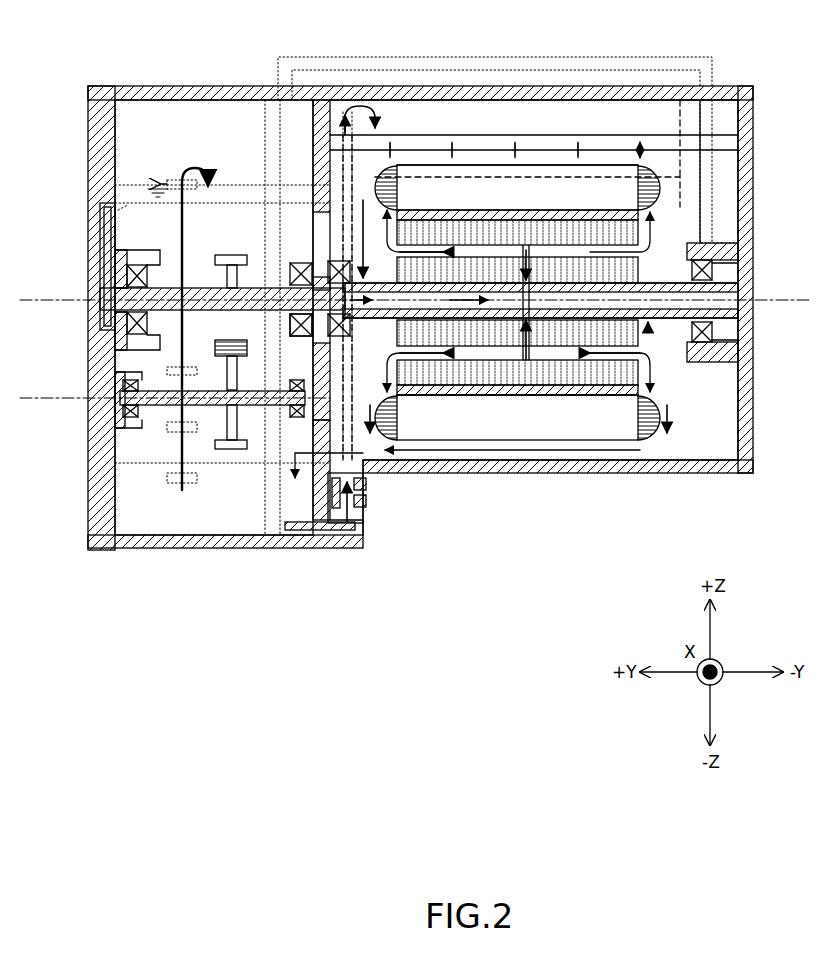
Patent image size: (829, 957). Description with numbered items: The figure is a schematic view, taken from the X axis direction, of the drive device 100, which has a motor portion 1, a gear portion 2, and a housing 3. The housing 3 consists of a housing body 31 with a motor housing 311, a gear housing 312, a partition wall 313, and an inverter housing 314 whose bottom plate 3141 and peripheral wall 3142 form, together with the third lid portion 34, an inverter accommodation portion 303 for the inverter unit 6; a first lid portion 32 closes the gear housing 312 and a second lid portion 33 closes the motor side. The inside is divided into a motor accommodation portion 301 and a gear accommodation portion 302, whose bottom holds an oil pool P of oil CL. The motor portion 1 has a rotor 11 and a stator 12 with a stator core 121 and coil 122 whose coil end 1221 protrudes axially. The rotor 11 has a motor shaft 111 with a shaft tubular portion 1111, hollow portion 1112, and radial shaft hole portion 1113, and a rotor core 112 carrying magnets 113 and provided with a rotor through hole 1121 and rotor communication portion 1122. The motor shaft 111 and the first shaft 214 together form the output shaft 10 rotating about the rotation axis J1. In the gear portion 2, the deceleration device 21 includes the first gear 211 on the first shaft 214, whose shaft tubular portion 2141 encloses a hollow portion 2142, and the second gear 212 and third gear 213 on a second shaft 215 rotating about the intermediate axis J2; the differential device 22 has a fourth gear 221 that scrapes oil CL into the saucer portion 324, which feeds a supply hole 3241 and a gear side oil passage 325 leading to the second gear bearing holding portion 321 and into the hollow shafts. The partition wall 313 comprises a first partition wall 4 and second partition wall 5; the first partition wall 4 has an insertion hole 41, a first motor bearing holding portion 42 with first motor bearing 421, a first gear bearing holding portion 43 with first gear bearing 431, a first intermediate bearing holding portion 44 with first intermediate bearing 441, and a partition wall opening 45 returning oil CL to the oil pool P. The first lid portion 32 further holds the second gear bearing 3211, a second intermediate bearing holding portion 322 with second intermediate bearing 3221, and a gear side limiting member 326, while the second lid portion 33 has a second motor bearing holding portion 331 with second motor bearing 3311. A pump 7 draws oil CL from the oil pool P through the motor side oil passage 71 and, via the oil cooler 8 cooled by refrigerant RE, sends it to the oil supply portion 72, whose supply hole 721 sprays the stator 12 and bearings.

The drive device 100 is at (75, 70).
The motor portion 1 is at (662, 372).
The output shaft 10 is at (648, 275).
The rotor 11 is at (608, 215).
The motor shaft 111 is at (650, 325).
The shaft tubular portion 1111 is at (740, 287).
The hollow portion 1112 is at (740, 312).
The rotor core 112 is at (432, 220).
The magnet 113 is at (480, 220).
The shaft hole portion 1113 is at (452, 380).
The rotor through hole 1121 is at (545, 380).
The rotor communication portion 1122 is at (526, 350).
The stator 12 is at (610, 445).
The stator core 121 is at (618, 445).
The coil 122 is at (640, 432).
The coil end 1221 is at (658, 435).
The gear portion 2 is at (200, 225).
The deceleration device 21 is at (232, 252).
The first gear 211 is at (214, 352).
The second gear 212 is at (232, 452).
The third gear 213 is at (170, 430).
The first shaft 214 is at (145, 333).
The shaft tubular portion 2141 is at (160, 262).
The hollow portion 2142 is at (224, 262).
The second shaft 215 is at (165, 371).
The differential device 22 is at (217, 448).
The fourth gear 221 is at (185, 486).
The housing 3 is at (155, 82).
The motor accommodation portion 301 is at (733, 448).
The gear accommodation portion 302 is at (168, 130).
The inverter accommodation portion 303 is at (435, 55).
The housing body 31 is at (348, 82).
The motor housing 311 is at (385, 85).
The gear housing 312 is at (190, 85).
The partition wall 313 is at (270, 44).
The inverter housing 314 is at (722, 222).
The bottom plate 3141 is at (702, 206).
The peripheral wall 3142 is at (714, 186).
The first lid portion 32 is at (86, 128).
The second gear bearing holding portion 321 is at (118, 262).
The second gear bearing 3211 is at (118, 330).
The second intermediate bearing holding portion 322 is at (86, 425).
The second intermediate bearing 3221 is at (118, 406).
The saucer portion 324 is at (152, 182).
The supply hole 3241 is at (155, 215).
The gear side oil passage 325 is at (100, 216).
The gear side limiting member 326 is at (100, 300).
The second lid portion 33 is at (758, 165).
The second motor bearing holding portion 331 is at (720, 372).
The second motor bearing 3311 is at (714, 333).
The third lid portion 34 is at (495, 70).
The first partition wall 4 is at (280, 98).
The insertion hole 41 is at (316, 270).
The first motor bearing holding portion 42 is at (352, 268).
The first motor bearing 421 is at (300, 260).
The first gear bearing holding portion 43 is at (290, 322).
The first gear bearing 431 is at (300, 340).
The first intermediate bearing holding portion 44 is at (290, 384).
The first intermediate bearing 441 is at (297, 420).
The partition wall opening 45 is at (300, 485).
The second partition wall 5 is at (262, 98).
The inverter unit 6 is at (676, 85).
The pump 7 is at (368, 530).
The motor side oil passage 71 is at (347, 535).
The oil supply portion 72 is at (565, 133).
The supply hole 721 is at (592, 148).
The oil cooler 8 is at (375, 488).
The oil CL is at (186, 167).
The refrigerant RE is at (366, 505).
The rotation axis J1 is at (22, 297).
The intermediate axis J2 is at (22, 395).
The oil pool P is at (150, 524).